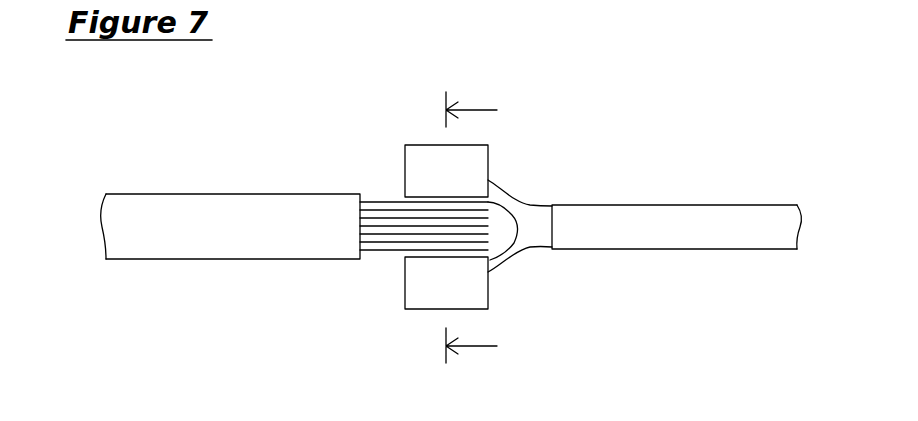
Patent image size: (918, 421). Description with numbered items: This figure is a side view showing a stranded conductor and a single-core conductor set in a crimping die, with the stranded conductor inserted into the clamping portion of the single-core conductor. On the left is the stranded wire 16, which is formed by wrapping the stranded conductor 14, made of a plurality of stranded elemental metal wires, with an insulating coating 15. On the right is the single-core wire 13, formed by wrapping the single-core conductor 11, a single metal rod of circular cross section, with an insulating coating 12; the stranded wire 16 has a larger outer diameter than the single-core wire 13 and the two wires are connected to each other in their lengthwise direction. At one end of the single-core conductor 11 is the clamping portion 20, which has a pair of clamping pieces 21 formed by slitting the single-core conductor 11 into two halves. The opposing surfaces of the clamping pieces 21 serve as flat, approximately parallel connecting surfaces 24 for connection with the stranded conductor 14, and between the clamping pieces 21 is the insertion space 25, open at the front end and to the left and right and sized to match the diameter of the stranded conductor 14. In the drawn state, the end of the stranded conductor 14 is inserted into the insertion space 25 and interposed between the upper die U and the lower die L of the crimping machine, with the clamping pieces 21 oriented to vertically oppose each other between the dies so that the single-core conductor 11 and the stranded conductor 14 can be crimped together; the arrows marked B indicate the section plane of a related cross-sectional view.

The single-core conductor 11 is at (534, 218).
The insulating coating 12 is at (652, 212).
The single-core wire 13 is at (725, 212).
The stranded conductor 14 is at (373, 217).
The insulating coating 15 is at (244, 204).
The stranded wire 16 is at (163, 202).
The clamping portion 20 is at (503, 197).
The clamping pieces 21 is at (466, 198).
The connecting surfaces 24 is at (427, 253).
The insertion space 25 is at (411, 222).
The upper die U is at (475, 160).
The lower die L is at (482, 297).
The section line B- B is at (471, 229).